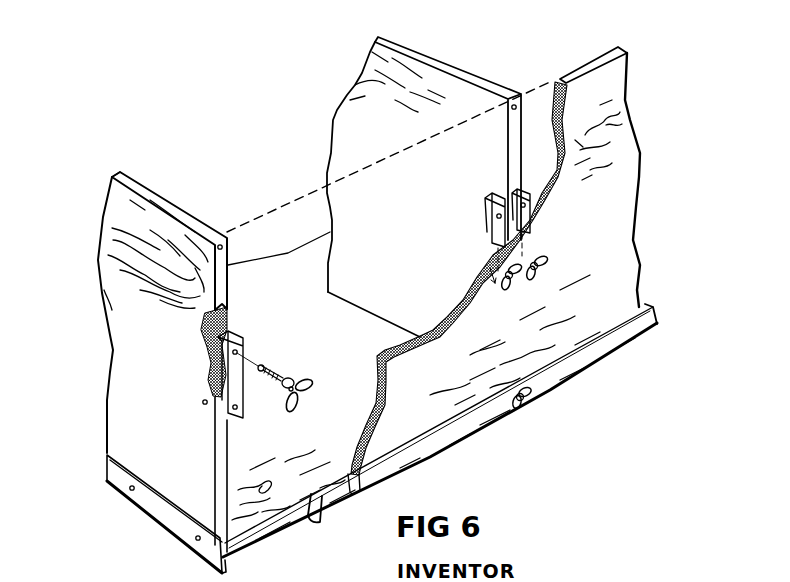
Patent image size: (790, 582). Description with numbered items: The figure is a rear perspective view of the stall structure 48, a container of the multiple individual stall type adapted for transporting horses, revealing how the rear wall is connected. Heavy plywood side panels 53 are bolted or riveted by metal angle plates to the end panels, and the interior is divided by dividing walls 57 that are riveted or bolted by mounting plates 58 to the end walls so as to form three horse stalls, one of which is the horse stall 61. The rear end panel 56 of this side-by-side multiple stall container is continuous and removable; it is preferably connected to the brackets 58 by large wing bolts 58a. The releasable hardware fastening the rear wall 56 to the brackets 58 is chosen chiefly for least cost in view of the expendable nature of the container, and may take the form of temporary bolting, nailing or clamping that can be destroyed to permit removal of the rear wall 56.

The stall structure 48 is at (601, 406).
The side panels 53 is at (108, 373).
The rear end panel 56 is at (636, 137).
The dividing walls 57 is at (450, 65).
The mounting plates 58 is at (245, 339).
The wing bolts 58a is at (305, 391).
The horse stall 61 is at (318, 356).